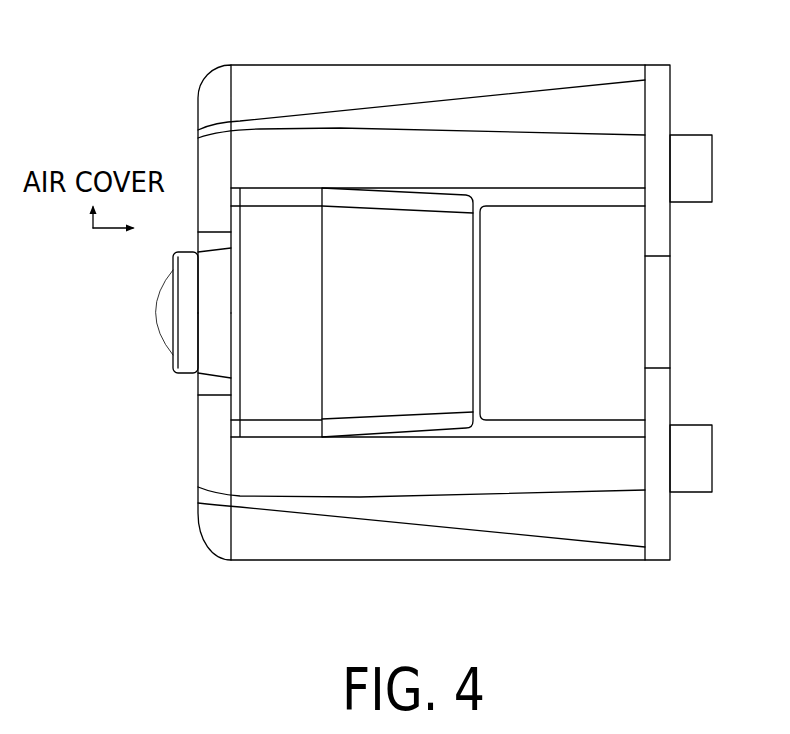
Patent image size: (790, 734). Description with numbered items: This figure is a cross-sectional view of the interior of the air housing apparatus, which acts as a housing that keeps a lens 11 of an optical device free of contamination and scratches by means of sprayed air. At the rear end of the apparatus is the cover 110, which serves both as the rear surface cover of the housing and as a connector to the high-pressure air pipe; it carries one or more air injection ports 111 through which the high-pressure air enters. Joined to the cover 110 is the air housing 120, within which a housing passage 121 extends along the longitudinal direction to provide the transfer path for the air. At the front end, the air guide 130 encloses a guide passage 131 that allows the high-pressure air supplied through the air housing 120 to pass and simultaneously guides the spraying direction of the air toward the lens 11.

The lens 11 is at (168, 327).
The cover 110 is at (661, 112).
The air injection port 111 is at (695, 453).
The air housing 120 is at (356, 85).
The housing passage 121 is at (478, 515).
The air guide 130 is at (215, 105).
The guide passage 131 is at (210, 500).